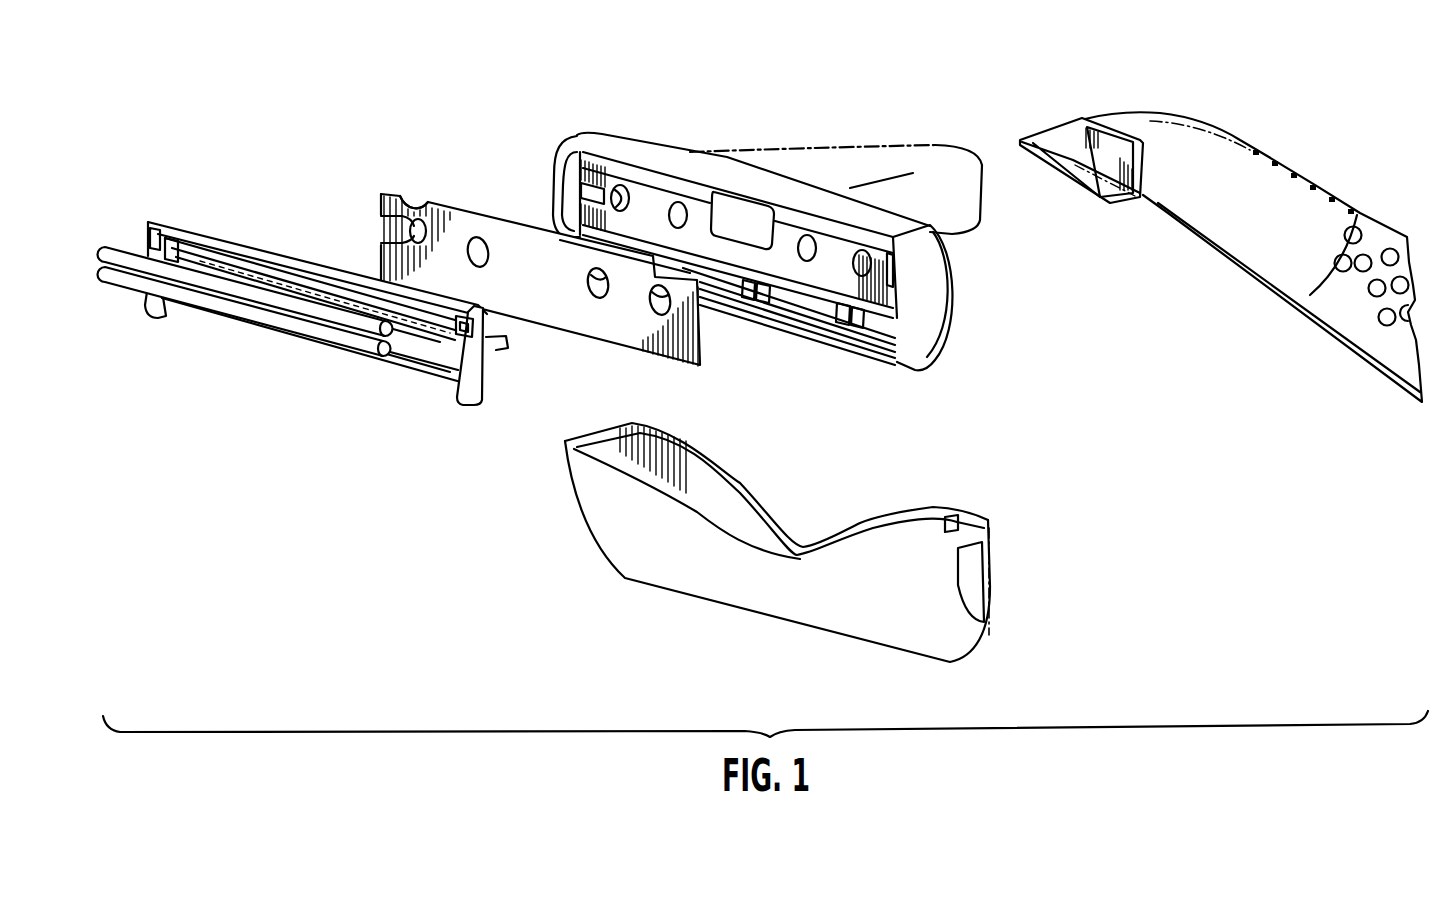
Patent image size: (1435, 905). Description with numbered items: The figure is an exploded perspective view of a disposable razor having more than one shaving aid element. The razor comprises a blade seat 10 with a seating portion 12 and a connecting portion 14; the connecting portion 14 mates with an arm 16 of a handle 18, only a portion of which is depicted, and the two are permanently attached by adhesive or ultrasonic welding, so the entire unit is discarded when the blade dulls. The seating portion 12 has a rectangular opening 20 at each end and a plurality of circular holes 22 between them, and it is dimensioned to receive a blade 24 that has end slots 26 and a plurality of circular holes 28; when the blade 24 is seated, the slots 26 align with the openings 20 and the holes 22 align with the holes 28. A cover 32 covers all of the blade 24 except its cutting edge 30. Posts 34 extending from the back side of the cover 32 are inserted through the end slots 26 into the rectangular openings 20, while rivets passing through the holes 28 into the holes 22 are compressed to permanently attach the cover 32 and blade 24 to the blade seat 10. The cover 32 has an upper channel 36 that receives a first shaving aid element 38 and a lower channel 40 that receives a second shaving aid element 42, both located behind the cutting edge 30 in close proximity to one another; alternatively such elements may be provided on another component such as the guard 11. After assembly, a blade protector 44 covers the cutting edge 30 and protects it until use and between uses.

The blade seat 10 is at (680, 157).
The guard 11 is at (823, 333).
The seating portion 12 is at (572, 150).
The connecting portion 14 is at (877, 157).
The arm 16 is at (1055, 137).
The handle 18 is at (1163, 133).
The rectangular opening 20 is at (582, 193).
The circular holes 22 is at (632, 197).
The blade 24 is at (453, 232).
The end slots 26 is at (385, 220).
The circular holes 28 is at (413, 243).
The cutting edge 30 is at (625, 335).
The cover 32 is at (316, 273).
The posts 34 is at (497, 350).
The upper channel 36 is at (207, 252).
The first shaving aid element 38 is at (108, 248).
The lower channel 40 is at (420, 333).
The second shaving aid element 42 is at (122, 284).
The blade protector 44 is at (657, 563).